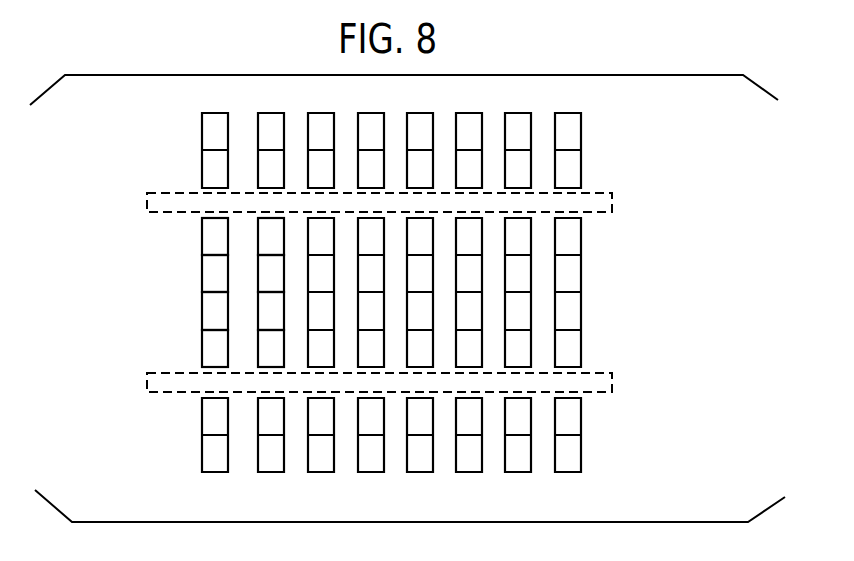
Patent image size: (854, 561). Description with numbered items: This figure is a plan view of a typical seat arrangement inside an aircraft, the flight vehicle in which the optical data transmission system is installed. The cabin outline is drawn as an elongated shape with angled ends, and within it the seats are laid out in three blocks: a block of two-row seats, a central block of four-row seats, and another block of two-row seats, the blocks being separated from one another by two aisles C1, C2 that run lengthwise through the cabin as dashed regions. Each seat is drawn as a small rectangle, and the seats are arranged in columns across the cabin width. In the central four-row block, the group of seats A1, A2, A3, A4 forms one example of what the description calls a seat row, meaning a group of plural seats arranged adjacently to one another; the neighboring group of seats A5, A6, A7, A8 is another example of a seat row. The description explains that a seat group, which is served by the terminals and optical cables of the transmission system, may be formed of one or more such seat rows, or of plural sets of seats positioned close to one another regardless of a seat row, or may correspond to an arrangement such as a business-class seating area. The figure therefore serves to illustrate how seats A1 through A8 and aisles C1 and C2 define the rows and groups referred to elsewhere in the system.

The seat A1 is at (202, 243).
The seat A2 is at (202, 283).
The seat A3 is at (202, 318).
The seat A4 is at (202, 353).
The seat A5 is at (258, 250).
The seat A6 is at (258, 290).
The seat A7 is at (258, 326).
The seat A8 is at (258, 361).
The aisle C1 is at (147, 212).
The aisle C2 is at (147, 392).